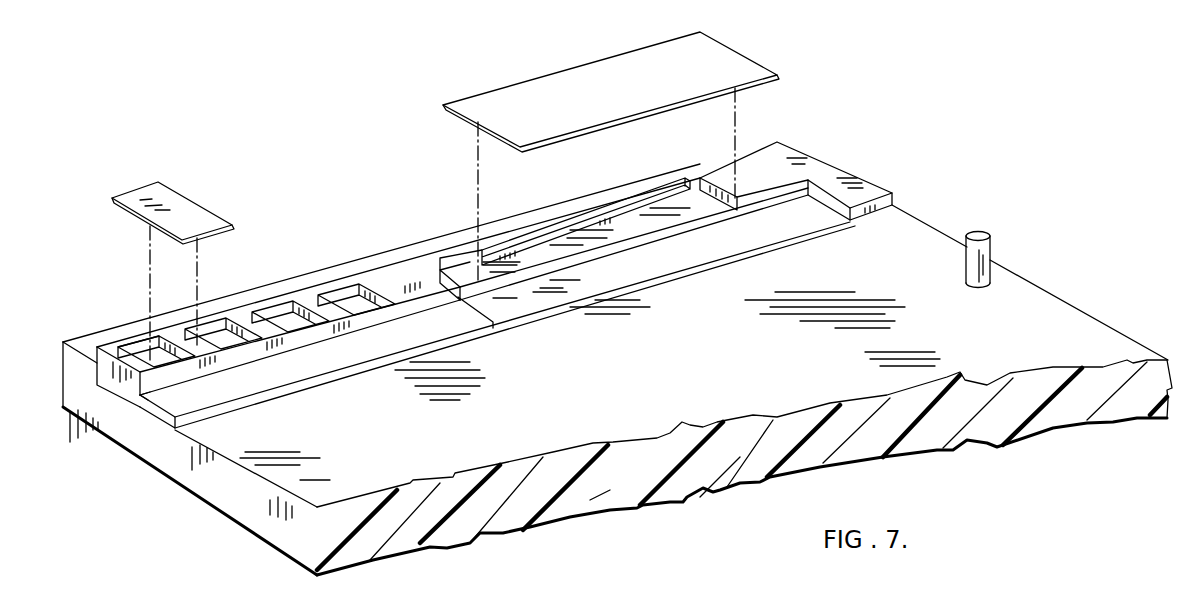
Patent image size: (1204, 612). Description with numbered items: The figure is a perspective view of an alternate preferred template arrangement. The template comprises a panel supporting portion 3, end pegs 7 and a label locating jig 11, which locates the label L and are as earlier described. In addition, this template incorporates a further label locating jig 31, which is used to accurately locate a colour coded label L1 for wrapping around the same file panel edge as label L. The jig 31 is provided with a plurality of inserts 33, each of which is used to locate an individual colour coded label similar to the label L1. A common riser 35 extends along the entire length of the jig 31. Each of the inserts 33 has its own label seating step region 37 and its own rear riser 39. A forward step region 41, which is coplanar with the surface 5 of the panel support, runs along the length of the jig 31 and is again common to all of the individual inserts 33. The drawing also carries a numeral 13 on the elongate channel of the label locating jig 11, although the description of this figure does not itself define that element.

The panel supporting portion 3 is at (1040, 298).
The surface of the panel support 5 is at (593, 425).
The end pegs 7 is at (992, 245).
The label locating jig 11 is at (818, 158).
The rail in channel 13 is at (470, 283).
The further label locating jig 31 is at (110, 375).
The inserts 33 is at (130, 348).
The common riser 35 is at (167, 362).
The label seating step region 37 is at (147, 388).
The rear riser 39 is at (128, 350).
The forward step region 41 is at (213, 390).
The label L is at (592, 52).
The colour coded label L1 is at (170, 203).